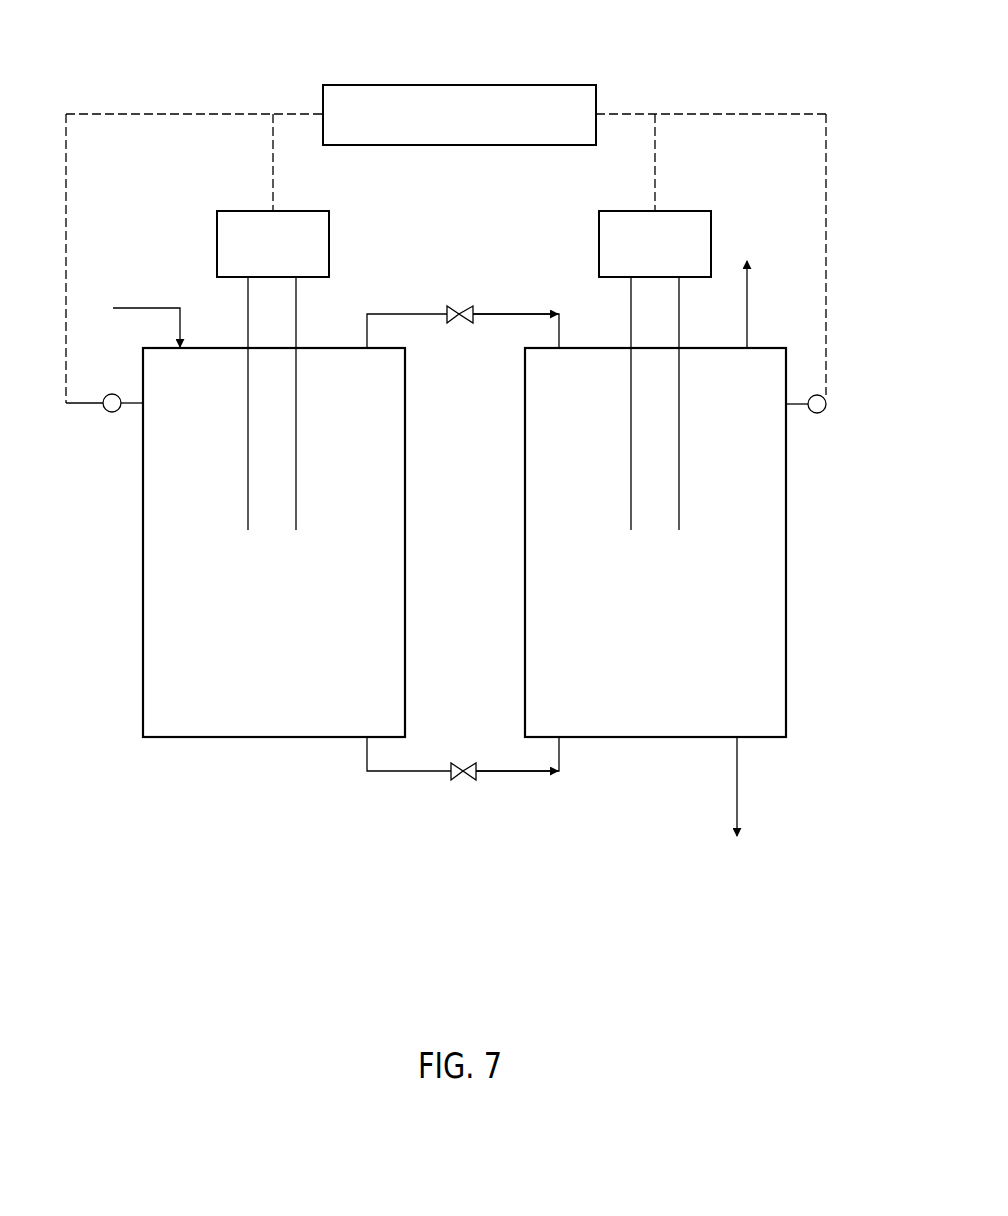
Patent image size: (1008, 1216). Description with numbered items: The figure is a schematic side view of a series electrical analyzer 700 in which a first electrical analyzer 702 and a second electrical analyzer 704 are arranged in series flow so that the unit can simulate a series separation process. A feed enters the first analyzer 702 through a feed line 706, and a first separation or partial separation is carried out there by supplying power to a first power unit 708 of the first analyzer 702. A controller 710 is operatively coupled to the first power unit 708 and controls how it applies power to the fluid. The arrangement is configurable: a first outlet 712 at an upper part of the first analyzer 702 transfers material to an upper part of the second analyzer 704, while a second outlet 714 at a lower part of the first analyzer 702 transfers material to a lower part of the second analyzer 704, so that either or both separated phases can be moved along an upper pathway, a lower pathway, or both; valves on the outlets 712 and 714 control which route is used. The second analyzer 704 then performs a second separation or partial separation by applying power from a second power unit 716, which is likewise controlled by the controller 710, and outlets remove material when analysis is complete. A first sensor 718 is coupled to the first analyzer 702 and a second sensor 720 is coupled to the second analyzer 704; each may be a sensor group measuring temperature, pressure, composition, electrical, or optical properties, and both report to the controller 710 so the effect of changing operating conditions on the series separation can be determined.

The series electrical analyzer 700 is at (724, 46).
The first electrical analyzer 702 is at (157, 737).
The second electrical analyzer 704 is at (762, 737).
The feed line 706 is at (157, 308).
The first power unit 708 is at (302, 260).
The controller 710 is at (487, 129).
The first outlet 712 is at (527, 312).
The second outlet 714 is at (415, 773).
The second power unit 716 is at (688, 258).
The first sensor 718 is at (106, 412).
The second sensor 720 is at (822, 413).